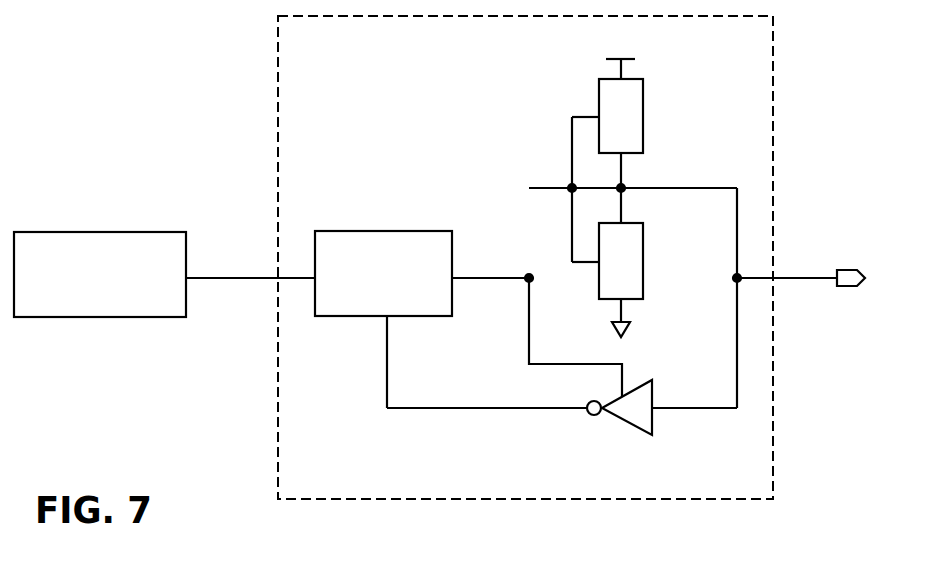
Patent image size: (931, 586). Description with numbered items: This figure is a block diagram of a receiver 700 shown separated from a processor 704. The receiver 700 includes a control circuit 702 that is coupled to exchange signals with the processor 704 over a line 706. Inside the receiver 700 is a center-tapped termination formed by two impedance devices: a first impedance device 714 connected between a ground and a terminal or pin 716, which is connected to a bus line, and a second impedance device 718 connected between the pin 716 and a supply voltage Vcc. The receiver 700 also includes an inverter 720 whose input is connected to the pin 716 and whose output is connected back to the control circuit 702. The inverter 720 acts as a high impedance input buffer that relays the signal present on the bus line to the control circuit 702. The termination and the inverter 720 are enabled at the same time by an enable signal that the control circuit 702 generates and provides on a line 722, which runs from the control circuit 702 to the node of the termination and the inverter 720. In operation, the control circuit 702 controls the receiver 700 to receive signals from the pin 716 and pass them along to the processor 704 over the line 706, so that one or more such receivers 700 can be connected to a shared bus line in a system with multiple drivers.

The receiver 700 is at (276, 66).
The control circuit 702 is at (350, 231).
The processor 704 is at (100, 232).
The line 706 is at (229, 277).
The first impedance device 714 is at (645, 262).
The terminal or pin 716 is at (844, 268).
The second impedance device 718 is at (645, 117).
The inverter 720 is at (625, 424).
The line 722 is at (526, 337).